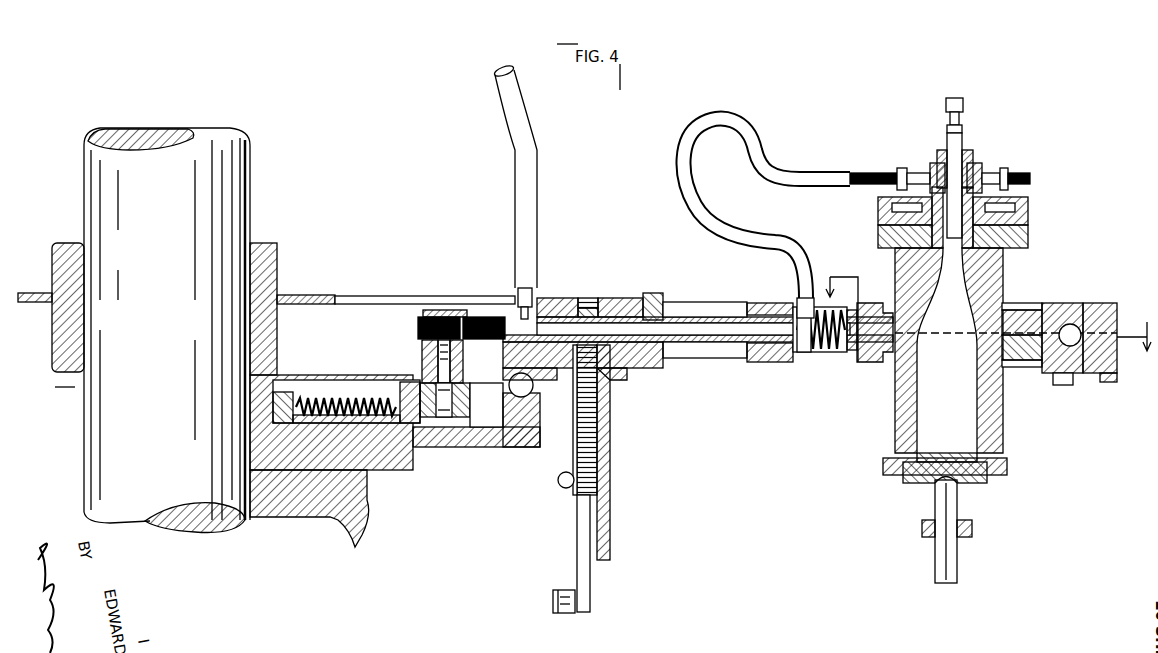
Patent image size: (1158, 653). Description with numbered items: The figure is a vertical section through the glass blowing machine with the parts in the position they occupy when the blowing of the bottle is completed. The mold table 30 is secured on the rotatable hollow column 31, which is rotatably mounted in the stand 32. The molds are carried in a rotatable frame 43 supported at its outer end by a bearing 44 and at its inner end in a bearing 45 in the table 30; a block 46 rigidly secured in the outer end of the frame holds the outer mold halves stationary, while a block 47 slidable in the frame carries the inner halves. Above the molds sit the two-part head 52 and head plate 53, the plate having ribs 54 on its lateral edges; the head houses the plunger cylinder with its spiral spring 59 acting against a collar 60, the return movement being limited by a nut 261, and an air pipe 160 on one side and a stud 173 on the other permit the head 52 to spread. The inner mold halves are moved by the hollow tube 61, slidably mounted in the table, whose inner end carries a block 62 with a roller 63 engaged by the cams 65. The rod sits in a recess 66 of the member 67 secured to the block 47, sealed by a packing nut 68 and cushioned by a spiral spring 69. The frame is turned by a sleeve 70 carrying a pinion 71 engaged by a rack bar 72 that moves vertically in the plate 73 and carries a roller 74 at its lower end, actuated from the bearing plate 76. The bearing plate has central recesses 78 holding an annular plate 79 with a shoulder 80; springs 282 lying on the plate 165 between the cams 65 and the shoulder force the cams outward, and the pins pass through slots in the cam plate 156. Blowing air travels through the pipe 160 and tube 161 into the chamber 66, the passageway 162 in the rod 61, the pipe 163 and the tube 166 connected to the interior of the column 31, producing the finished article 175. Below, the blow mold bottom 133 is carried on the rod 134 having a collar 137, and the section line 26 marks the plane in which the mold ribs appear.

The section line 26 is at (985, 305).
The mold table 30 is at (320, 295).
The hollow column 31 is at (250, 192).
The stand 32 is at (363, 531).
The rotatable frame 43 is at (655, 368).
The bearing 44 is at (1067, 303).
The bearing 45 is at (650, 294).
The block 46 is at (1007, 367).
The slidable block 47 is at (875, 362).
The head 52 is at (985, 170).
The head plate 53 is at (1028, 214).
The ribs 54 is at (880, 210).
The spiral spring 59 is at (992, 174).
The collar 60 is at (968, 165).
The hollow tube 61 is at (685, 319).
The block 62 is at (422, 350).
The roller 63 is at (470, 406).
The cams 65 is at (420, 384).
The recess 66 is at (813, 352).
The member 67 is at (838, 352).
The packing nut 68 is at (752, 356).
The spiral spring 69 is at (830, 352).
The sleeve 70 is at (608, 298).
The pinion 71 is at (582, 298).
The rack bar 72 is at (596, 468).
The plate 73 is at (611, 444).
The roller 74 is at (563, 613).
The bearing plate 76 is at (492, 430).
The central recesses 78 is at (508, 455).
The annular plate 79 is at (313, 425).
The shoulder 80 is at (287, 395).
The blow mold bottom 133 is at (905, 472).
The rod 134 is at (935, 572).
The collar 137 is at (973, 528).
The cam plate 156 is at (940, 165).
The air pipe 160 is at (920, 171).
The tube 161 is at (820, 166).
The passageway 162 is at (720, 330).
The pipe 163 is at (512, 292).
The plate 165 is at (350, 400).
The tube 166 is at (538, 186).
The stud 173 is at (1010, 181).
The finished article 175 is at (1003, 440).
The nut 261 is at (959, 150).
The springs 282 is at (312, 415).